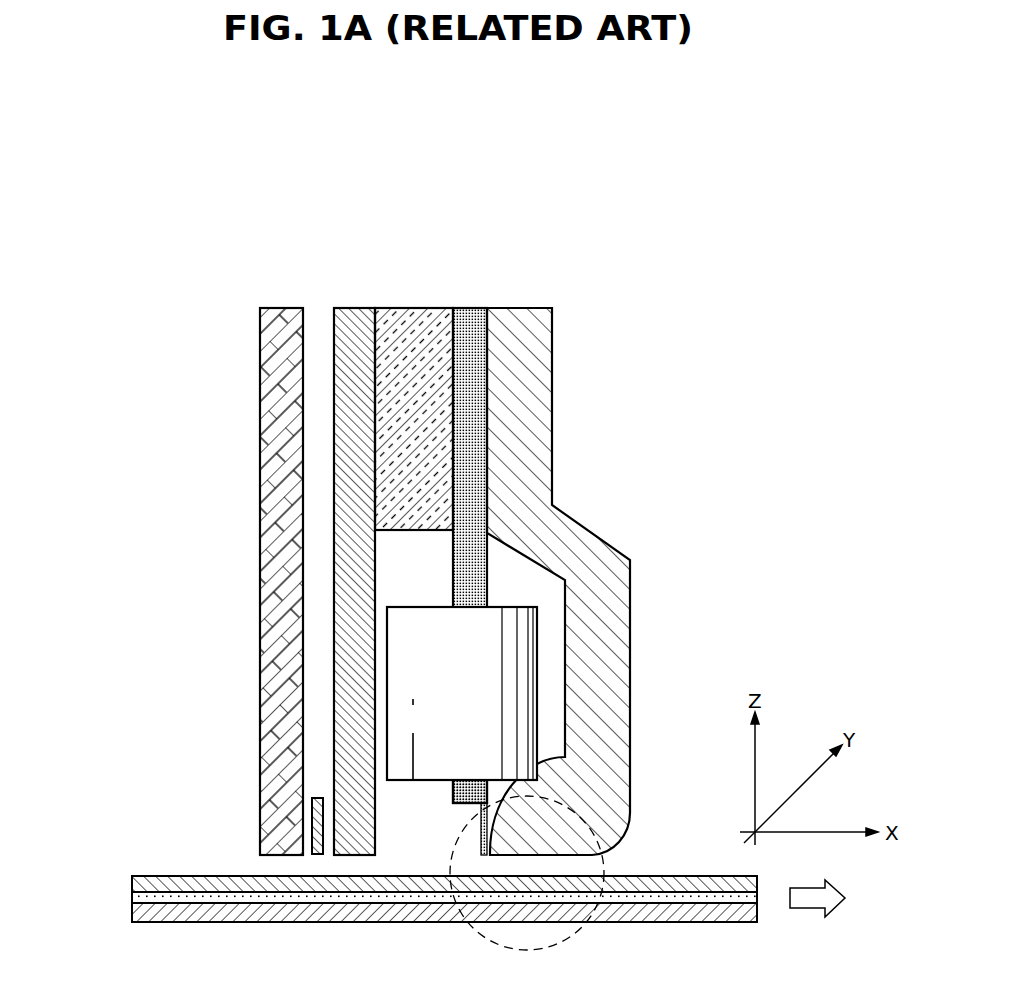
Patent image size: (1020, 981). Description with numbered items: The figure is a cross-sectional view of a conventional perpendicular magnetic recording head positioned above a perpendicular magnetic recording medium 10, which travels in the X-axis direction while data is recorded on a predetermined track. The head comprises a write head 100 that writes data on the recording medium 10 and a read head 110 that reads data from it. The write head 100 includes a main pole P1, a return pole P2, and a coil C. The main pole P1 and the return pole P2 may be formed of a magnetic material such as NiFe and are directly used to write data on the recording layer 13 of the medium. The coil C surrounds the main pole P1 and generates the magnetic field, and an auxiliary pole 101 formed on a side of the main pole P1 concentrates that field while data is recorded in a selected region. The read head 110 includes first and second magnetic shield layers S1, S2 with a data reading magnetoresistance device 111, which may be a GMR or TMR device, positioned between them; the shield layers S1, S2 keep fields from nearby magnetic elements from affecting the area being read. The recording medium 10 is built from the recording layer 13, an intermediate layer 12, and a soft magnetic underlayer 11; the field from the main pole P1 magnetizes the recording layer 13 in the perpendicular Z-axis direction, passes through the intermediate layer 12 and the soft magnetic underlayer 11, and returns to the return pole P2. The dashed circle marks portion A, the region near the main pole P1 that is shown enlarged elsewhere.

The read head 110 is at (283, 549).
The write head 100 is at (445, 553).
The data reading magnetoresistance device 111 is at (312, 823).
The auxiliary pole 101 is at (453, 805).
The main pole P1 is at (491, 808).
The return pole P2 is at (623, 658).
The coil C is at (395, 624).
The first magnetic shield layer S1 is at (347, 700).
The second magnetic shield layer S2 is at (262, 752).
The portion A is at (605, 858).
The perpendicular magnetic recording medium 10 is at (389, 897).
The soft magnetic underlayer 11 is at (415, 921).
The intermediate layer 12 is at (132, 898).
The recording layer 13 is at (132, 882).